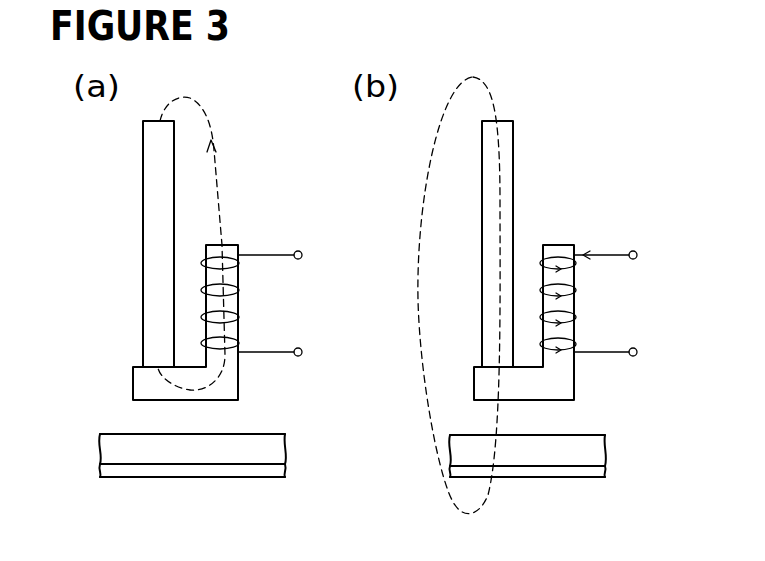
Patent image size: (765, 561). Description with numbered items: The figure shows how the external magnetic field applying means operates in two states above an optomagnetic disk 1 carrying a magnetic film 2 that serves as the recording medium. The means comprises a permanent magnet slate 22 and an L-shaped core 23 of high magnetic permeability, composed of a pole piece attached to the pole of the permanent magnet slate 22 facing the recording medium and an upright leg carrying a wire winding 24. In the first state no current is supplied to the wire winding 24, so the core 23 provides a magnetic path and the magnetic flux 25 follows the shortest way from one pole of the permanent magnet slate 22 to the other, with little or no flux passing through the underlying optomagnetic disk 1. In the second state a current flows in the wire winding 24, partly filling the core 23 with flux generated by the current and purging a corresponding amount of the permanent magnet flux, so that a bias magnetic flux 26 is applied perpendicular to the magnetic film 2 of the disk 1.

In FIG. 3a, the optomagnetic disk 1 is at (82, 432).
In FIG. 3b, the optomagnetic disk 1 is at (634, 430).
In FIG. 3a, the magnetic film 2 is at (100, 477).
In FIG. 3b, the magnetic film 2 is at (605, 477).
In FIG. 3a, the permanent magnet slate 22 is at (143, 240).
In FIG. 3b, the permanent magnet slate 22 is at (483, 205).
In FIG. 3a, the L-shaped core 23 is at (225, 384).
In FIG. 3b, the L-shaped core 23 is at (565, 384).
In FIG. 3a, the wire winding 24 is at (262, 255).
In FIG. 3b, the wire winding 24 is at (608, 254).
In FIG. 3a, the magnetic flux of permanent magnet 25 is at (197, 198).
In FIG. 3b, the magnetic flux through recording medium 26 is at (497, 425).